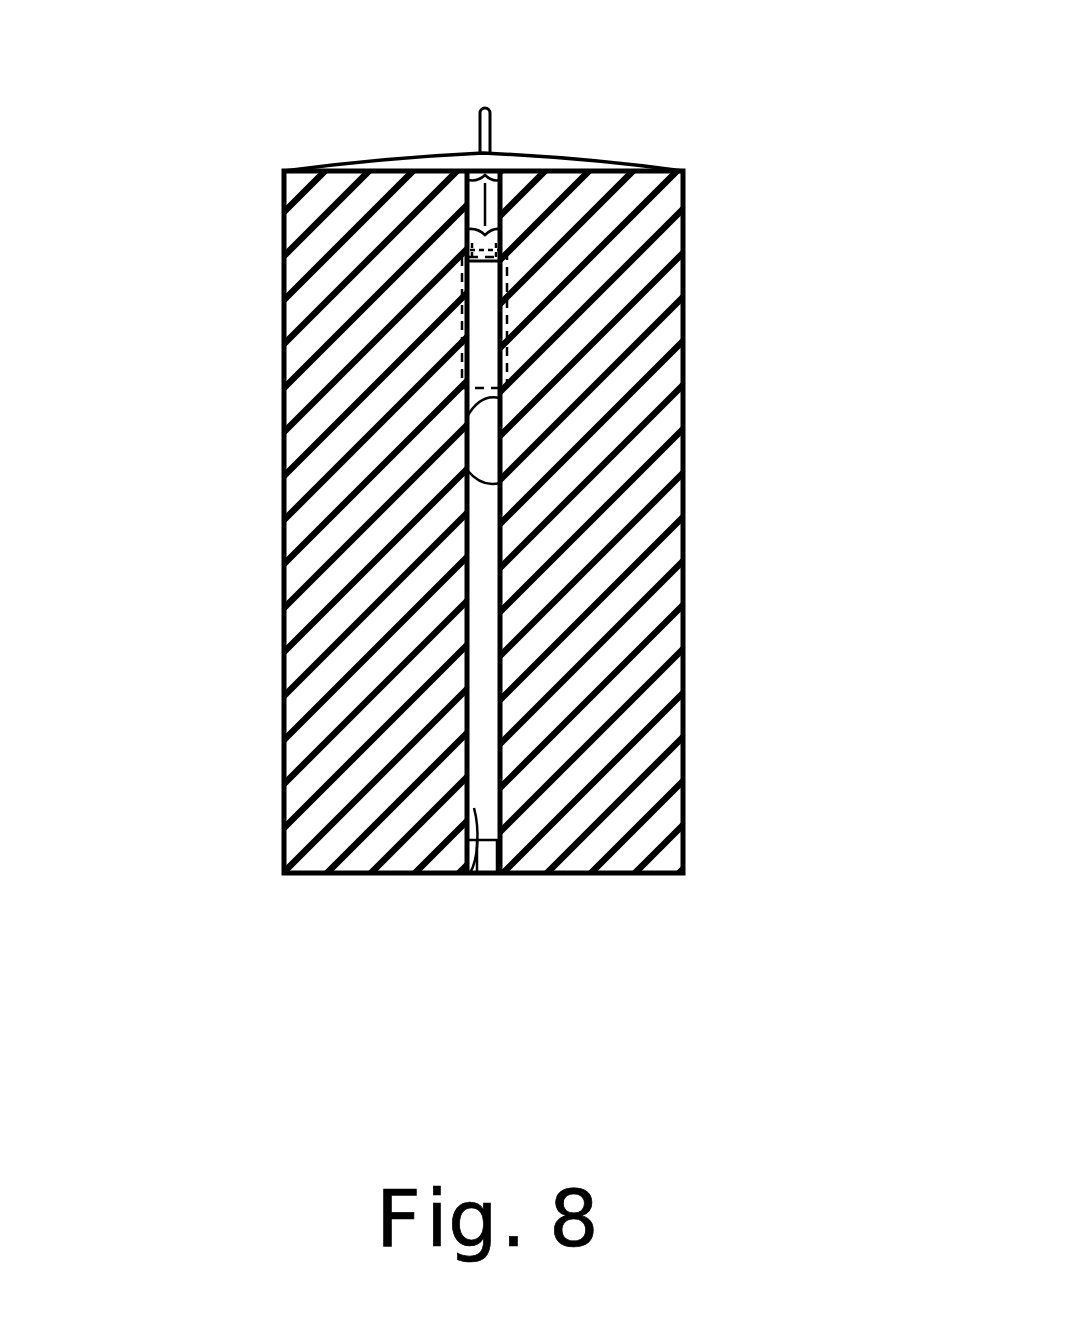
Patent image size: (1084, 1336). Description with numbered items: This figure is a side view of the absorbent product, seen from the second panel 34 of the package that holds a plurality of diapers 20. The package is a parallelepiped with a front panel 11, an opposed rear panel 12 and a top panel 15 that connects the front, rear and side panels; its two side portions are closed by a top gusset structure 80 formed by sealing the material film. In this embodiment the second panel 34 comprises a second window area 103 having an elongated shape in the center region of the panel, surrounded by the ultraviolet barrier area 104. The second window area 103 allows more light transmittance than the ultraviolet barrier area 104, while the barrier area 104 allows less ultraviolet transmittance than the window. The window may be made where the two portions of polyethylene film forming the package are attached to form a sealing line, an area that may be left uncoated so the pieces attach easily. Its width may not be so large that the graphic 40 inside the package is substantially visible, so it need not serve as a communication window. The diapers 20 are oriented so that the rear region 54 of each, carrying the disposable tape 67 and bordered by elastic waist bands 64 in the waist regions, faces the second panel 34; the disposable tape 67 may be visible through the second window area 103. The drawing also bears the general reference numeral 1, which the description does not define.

The assembly 1 is at (762, 81).
The front panel 11 is at (283, 713).
The rear panel 12 is at (683, 619).
The top panel 15 is at (400, 152).
The diaper 20 is at (482, 622).
The second panel 34 is at (665, 785).
The graphic 40 is at (490, 245).
The rear region 54 is at (478, 565).
The elastic waist bands 64 is at (493, 208).
The disposable tape 67 is at (507, 285).
The top gusset structure 80 is at (493, 162).
The second window area 103 is at (470, 873).
The ultraviolet barrier area 104 is at (307, 488).